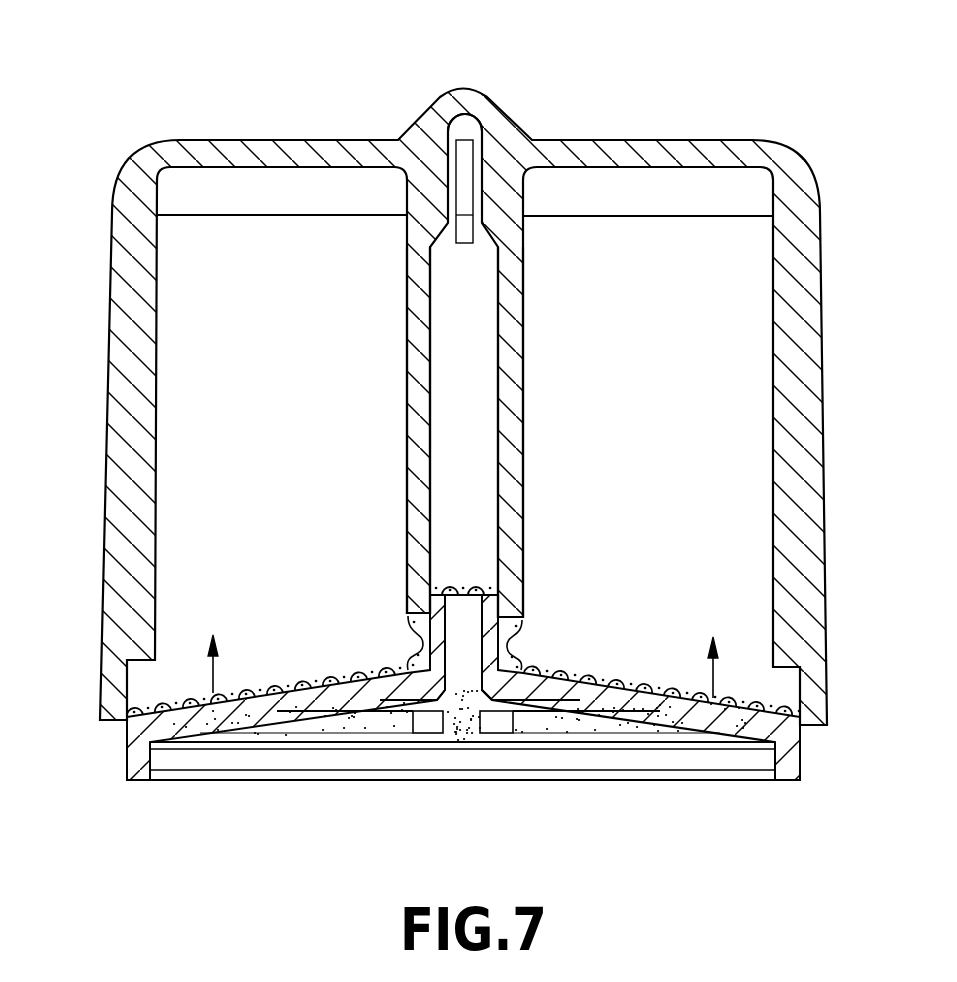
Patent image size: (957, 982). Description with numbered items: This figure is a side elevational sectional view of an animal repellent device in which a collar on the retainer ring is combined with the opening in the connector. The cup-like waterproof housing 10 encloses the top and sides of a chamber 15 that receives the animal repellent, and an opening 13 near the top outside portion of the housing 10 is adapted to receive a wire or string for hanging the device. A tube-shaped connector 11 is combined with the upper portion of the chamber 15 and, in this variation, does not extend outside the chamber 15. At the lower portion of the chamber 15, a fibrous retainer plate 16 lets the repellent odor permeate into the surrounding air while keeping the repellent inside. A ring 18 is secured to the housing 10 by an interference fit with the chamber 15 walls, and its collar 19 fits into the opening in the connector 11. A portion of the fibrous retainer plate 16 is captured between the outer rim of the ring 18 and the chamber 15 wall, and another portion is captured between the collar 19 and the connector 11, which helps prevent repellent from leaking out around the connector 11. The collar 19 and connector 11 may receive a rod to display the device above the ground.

The housing 10 is at (137, 192).
The connector 11 is at (508, 345).
The opening 13 is at (478, 98).
The chamber 15 is at (302, 395).
The fibrous retainer plate 16 is at (267, 677).
The ring 18 is at (283, 700).
The collar 19 is at (436, 642).